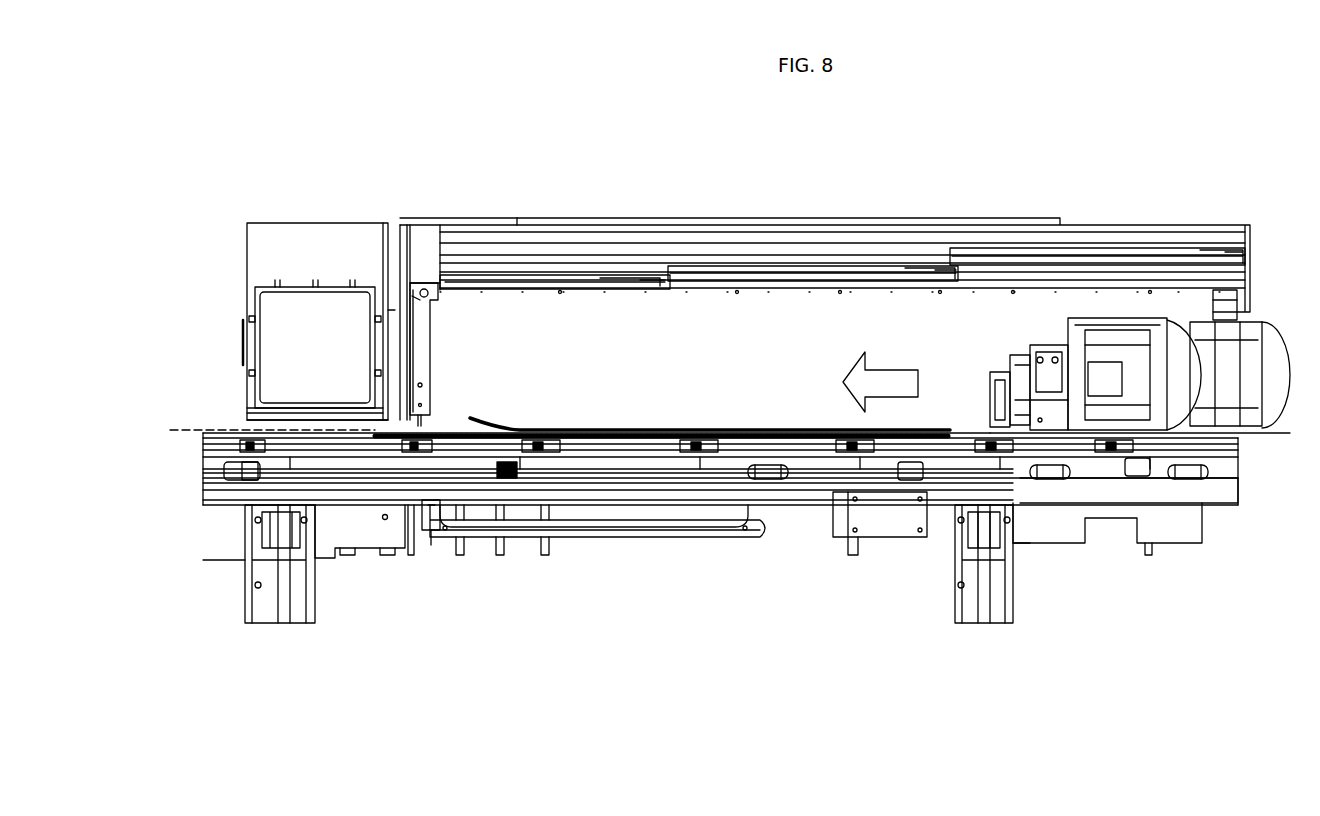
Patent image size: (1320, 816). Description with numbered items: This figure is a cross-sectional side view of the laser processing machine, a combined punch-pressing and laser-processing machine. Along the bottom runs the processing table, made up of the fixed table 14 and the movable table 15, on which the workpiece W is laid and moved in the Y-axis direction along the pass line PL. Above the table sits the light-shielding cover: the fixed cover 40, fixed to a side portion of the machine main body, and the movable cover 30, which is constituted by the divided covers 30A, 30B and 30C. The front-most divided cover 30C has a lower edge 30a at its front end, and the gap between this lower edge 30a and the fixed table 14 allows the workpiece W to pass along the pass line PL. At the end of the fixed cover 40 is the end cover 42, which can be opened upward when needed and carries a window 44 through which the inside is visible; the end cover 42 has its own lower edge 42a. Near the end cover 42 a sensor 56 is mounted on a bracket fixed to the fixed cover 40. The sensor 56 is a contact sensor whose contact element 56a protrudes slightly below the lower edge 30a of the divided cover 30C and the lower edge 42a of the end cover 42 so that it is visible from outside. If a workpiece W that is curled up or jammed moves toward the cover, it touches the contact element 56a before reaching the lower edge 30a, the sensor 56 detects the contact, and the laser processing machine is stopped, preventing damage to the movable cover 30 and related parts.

The fixed cover 40 is at (778, 218).
The divided cover 30C is at (607, 282).
The divided cover 30B is at (808, 272).
The divided cover 30A is at (1103, 250).
The movable cover 30 is at (1213, 248).
The lower edge 30a is at (425, 531).
The end cover 42 is at (262, 243).
The window 44 is at (275, 311).
The lower edge 42a is at (312, 428).
The pass line PL is at (193, 428).
The contact element 56a is at (478, 354).
The sensor 56 is at (421, 424).
The workpiece W is at (663, 430).
The fixed table 14 is at (720, 422).
The movable table 15 is at (575, 432).